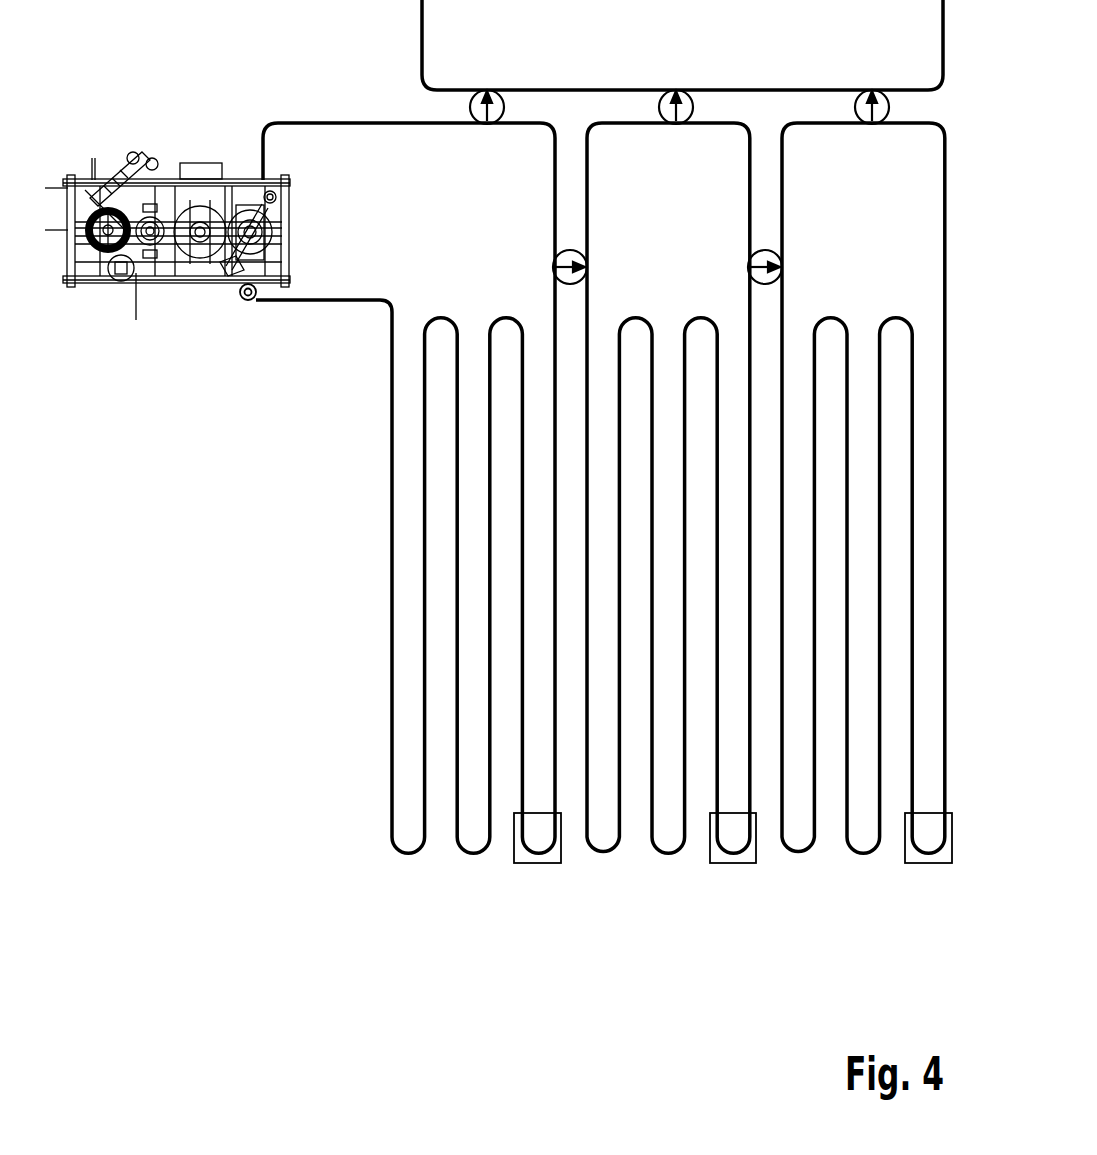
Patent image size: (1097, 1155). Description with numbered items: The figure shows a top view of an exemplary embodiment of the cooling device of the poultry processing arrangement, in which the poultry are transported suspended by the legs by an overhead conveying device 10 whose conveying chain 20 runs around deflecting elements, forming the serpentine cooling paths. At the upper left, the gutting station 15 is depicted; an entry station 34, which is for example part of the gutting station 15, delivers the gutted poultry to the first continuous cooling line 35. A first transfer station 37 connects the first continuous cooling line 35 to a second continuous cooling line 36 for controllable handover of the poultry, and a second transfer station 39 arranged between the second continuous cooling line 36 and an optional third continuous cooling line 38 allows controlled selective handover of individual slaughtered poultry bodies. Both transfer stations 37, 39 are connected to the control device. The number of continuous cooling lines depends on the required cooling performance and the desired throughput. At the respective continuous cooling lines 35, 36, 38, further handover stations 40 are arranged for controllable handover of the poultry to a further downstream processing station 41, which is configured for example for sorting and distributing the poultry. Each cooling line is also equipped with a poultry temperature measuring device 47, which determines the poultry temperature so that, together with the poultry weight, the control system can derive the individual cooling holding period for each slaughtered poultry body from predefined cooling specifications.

The overhead conveying device 10 is at (265, 782).
The gutting station 15 is at (139, 138).
The conveying chain 20 is at (603, 500).
The entry station 34 is at (232, 312).
The first continuous cooling line 35 is at (558, 924).
The second continuous cooling line 36 is at (753, 924).
The first transfer station 37 is at (557, 253).
The third continuous cooling line 38 is at (950, 924).
The second transfer station 39 is at (752, 253).
The handover station 40 is at (487, 124).
The downstream processing station 41 is at (667, 58).
The poultry temperature measuring device 47 is at (537, 863).